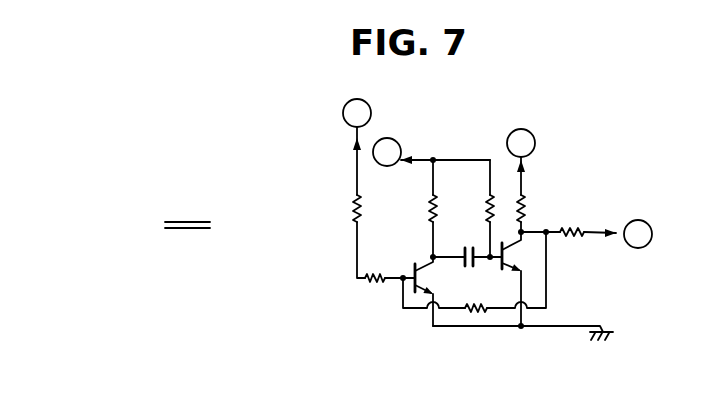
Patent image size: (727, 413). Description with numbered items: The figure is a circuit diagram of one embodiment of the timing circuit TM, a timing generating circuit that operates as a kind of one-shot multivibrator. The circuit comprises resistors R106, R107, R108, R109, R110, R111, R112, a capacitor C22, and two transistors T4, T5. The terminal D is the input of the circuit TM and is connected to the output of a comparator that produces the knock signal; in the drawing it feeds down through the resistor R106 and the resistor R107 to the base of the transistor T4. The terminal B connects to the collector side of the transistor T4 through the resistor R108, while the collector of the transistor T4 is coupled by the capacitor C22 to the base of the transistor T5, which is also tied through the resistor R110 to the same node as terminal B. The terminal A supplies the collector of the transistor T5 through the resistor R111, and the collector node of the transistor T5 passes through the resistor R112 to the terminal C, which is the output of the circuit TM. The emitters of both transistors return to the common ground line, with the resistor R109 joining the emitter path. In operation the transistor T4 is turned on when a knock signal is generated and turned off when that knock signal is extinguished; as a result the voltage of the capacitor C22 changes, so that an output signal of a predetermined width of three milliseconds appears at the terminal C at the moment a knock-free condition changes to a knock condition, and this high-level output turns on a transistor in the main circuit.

The resistor R106 is at (324, 208).
The resistor R107 is at (382, 265).
The resistor R108 is at (435, 218).
The resistor R109 is at (473, 313).
The resistor R110 is at (493, 205).
The resistor R111 is at (531, 200).
The resistor R112 is at (561, 232).
The capacitor C22 is at (471, 248).
The transistor T4 is at (421, 277).
The transistor T5 is at (521, 253).
The timing circuit TM is at (187, 211).
The terminal A is at (521, 162).
The terminal B is at (431, 152).
The terminal C is at (618, 234).
The terminal D is at (357, 147).